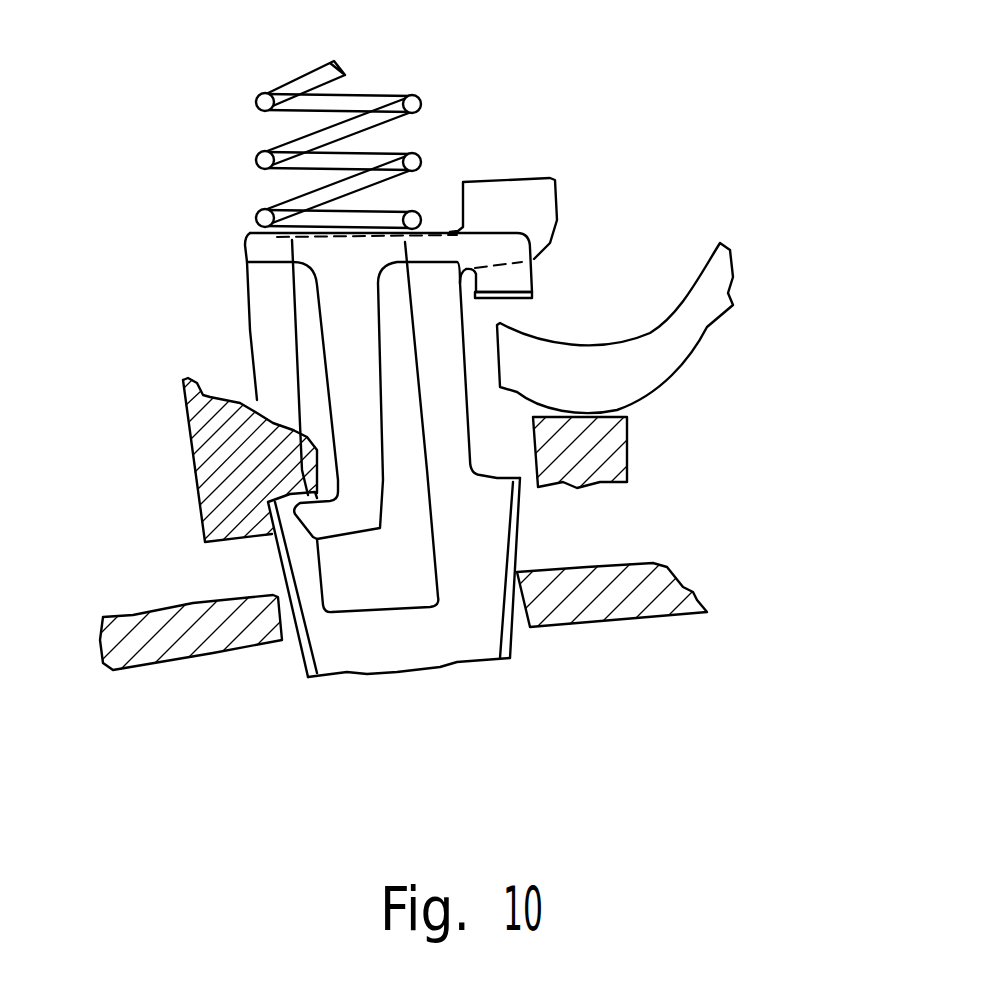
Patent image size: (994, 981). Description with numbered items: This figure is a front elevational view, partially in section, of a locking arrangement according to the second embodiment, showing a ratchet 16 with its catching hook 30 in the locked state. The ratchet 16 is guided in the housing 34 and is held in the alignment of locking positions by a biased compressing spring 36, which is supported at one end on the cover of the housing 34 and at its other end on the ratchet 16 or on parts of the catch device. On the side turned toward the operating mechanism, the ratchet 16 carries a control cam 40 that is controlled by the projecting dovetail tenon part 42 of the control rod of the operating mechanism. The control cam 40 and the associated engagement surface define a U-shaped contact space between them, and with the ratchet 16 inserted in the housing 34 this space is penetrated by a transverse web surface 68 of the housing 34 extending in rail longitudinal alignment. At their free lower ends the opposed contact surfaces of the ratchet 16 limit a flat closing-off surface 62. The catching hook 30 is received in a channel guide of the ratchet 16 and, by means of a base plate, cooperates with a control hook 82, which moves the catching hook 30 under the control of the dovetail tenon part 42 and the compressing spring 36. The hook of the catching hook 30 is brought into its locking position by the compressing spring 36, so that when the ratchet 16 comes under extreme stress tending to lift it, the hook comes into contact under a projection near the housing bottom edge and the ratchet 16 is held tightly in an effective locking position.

The ratchet 16 is at (466, 640).
The catching hook 30 is at (337, 333).
The housing 34 is at (217, 468).
The compressing spring 36 is at (416, 97).
The control cam 40 is at (535, 218).
The dovetail tenon part 42 is at (693, 323).
The closing-off surface 62 is at (398, 672).
The transverse web surface 68 is at (610, 445).
The control hook 82 is at (510, 283).